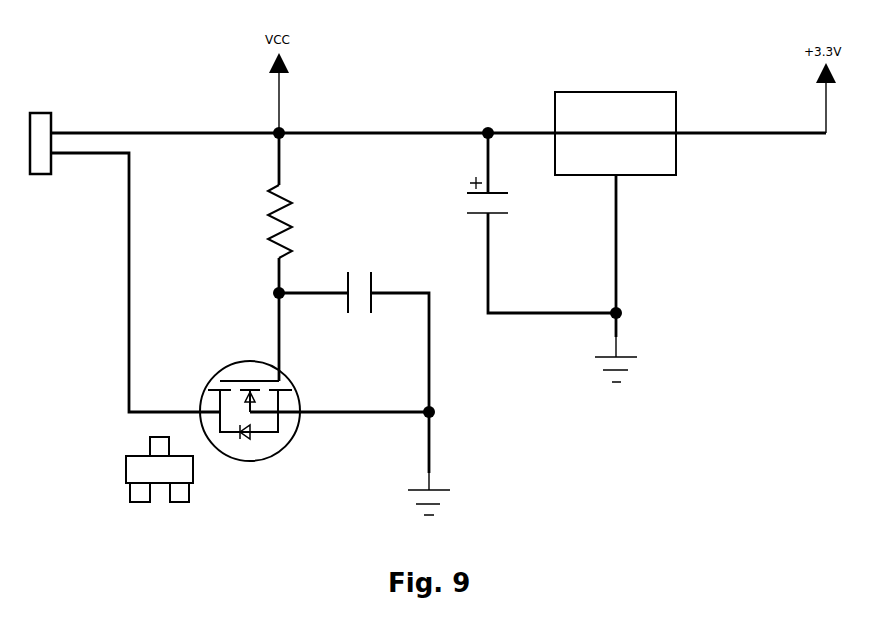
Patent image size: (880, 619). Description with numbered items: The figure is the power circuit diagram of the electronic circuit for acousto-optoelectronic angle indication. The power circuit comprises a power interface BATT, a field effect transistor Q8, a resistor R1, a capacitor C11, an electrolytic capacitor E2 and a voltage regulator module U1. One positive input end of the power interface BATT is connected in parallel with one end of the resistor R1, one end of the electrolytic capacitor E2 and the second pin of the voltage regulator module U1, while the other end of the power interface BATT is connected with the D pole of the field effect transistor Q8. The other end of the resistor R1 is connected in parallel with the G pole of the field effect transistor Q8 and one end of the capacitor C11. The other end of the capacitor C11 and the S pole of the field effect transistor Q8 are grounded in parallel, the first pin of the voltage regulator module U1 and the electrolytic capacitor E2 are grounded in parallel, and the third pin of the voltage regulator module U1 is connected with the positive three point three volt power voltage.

The power interface BATT is at (39, 132).
The resistor R1 is at (298, 221).
The capacitor C11 is at (358, 306).
The electrolytic capacitor E2 is at (469, 197).
The voltage regulator module U1 is at (615, 139).
The field effect transistor Q8 is at (221, 426).